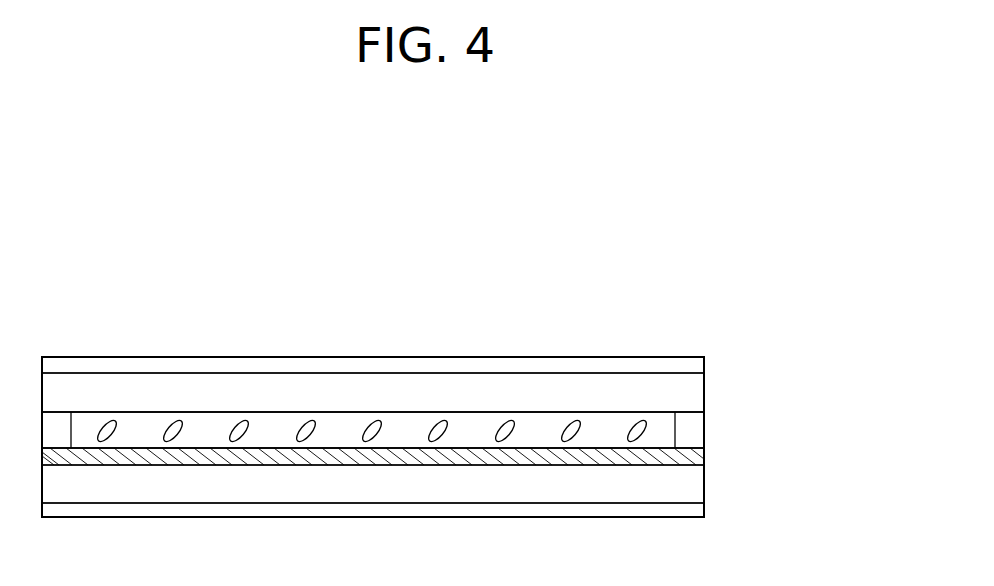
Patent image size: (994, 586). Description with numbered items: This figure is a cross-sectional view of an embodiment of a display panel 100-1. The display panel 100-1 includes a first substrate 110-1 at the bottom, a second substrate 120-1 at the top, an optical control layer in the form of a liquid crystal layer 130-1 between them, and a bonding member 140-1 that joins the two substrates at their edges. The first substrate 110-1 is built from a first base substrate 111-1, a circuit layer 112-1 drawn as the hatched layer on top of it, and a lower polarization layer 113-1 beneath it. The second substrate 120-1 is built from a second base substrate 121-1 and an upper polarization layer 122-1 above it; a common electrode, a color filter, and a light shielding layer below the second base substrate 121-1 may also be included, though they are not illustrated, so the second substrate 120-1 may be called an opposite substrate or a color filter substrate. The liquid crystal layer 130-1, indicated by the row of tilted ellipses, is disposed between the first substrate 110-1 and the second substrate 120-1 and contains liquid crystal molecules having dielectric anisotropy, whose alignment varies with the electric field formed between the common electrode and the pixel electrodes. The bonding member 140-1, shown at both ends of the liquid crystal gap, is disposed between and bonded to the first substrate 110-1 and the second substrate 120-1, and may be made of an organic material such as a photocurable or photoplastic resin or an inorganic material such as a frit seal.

The display panel 100-1 is at (752, 292).
The first substrate 110-1 is at (823, 447).
The first base substrate 111-1 is at (695, 483).
The circuit layer 112-1 is at (695, 455).
The lower polarization layer 113-1 is at (695, 509).
The second substrate 120-1 is at (823, 350).
The second base substrate 121-1 is at (695, 391).
The upper polarization layer 122-1 is at (695, 364).
The liquid crystal layer 130-1 is at (572, 420).
The bonding member 140-1 is at (695, 429).